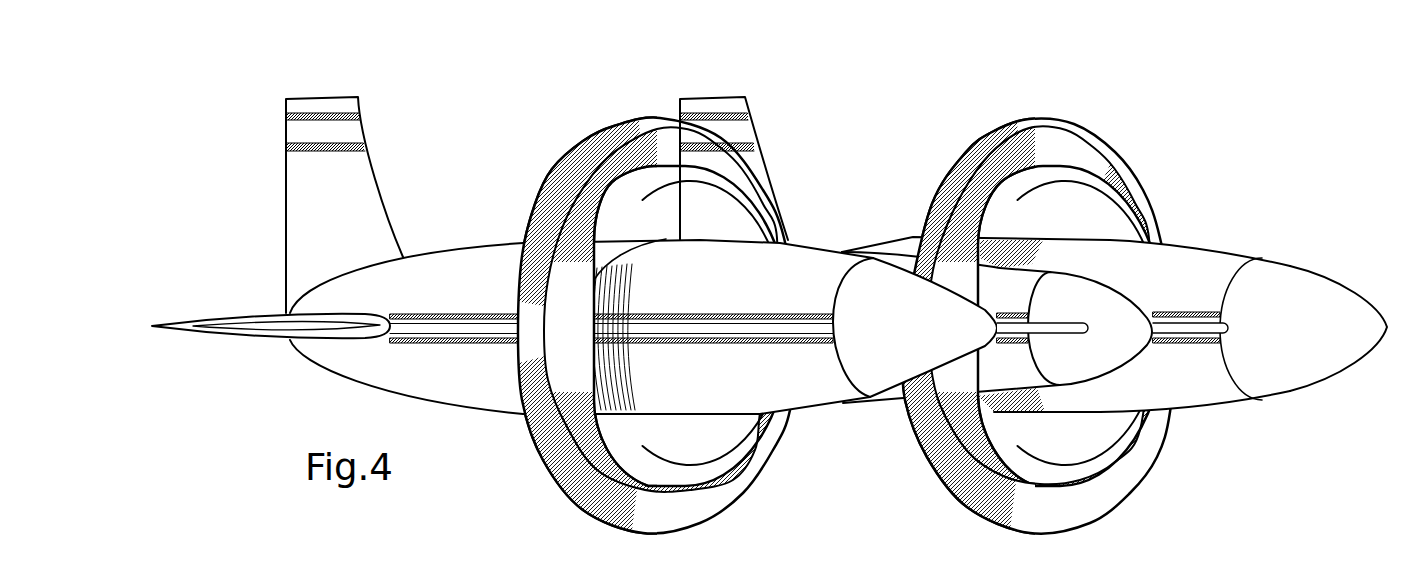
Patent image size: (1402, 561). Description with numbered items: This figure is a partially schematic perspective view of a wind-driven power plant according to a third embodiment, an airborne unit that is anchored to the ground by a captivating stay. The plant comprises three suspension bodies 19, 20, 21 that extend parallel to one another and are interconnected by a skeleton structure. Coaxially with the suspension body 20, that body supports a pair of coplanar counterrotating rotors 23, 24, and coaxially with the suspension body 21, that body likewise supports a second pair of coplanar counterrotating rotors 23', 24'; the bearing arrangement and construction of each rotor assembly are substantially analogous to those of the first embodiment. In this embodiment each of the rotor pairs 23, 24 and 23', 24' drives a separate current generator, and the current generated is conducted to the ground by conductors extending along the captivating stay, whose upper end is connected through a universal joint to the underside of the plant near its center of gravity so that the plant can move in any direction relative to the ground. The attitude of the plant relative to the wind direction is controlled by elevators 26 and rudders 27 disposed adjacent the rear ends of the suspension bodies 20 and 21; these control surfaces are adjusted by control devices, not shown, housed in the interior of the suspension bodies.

The suspension body 19 is at (1108, 308).
The suspension body 20 is at (1280, 268).
The suspension body 21 is at (886, 376).
The rotor 23 is at (652, 326).
The rotor 24 is at (636, 309).
The rotor 23' is at (1028, 326).
The rotor 24' is at (1011, 306).
The elevator 26 is at (208, 325).
The rudder 27 is at (367, 168).